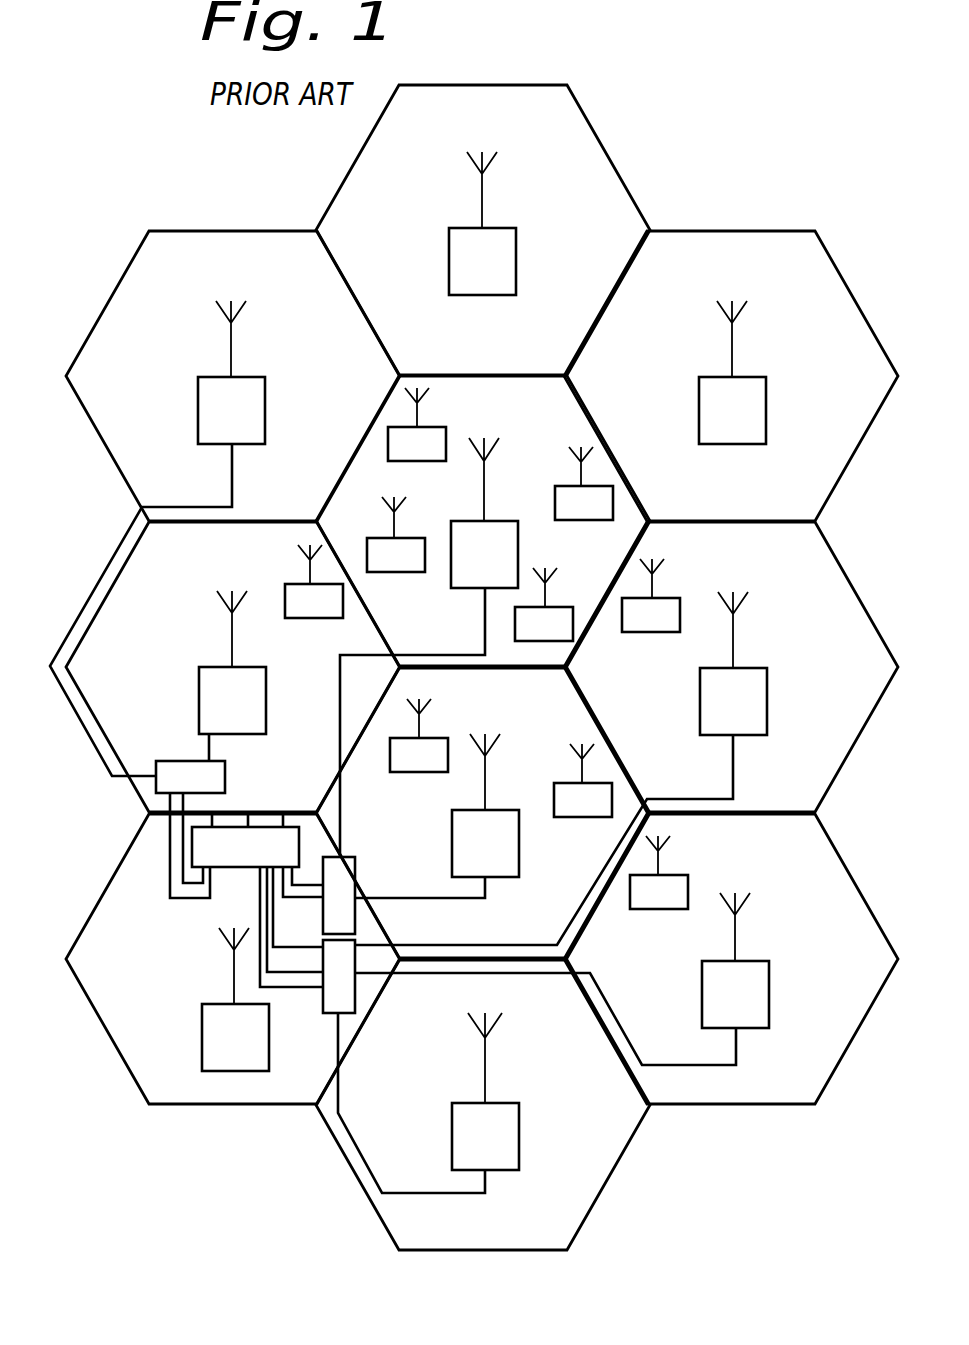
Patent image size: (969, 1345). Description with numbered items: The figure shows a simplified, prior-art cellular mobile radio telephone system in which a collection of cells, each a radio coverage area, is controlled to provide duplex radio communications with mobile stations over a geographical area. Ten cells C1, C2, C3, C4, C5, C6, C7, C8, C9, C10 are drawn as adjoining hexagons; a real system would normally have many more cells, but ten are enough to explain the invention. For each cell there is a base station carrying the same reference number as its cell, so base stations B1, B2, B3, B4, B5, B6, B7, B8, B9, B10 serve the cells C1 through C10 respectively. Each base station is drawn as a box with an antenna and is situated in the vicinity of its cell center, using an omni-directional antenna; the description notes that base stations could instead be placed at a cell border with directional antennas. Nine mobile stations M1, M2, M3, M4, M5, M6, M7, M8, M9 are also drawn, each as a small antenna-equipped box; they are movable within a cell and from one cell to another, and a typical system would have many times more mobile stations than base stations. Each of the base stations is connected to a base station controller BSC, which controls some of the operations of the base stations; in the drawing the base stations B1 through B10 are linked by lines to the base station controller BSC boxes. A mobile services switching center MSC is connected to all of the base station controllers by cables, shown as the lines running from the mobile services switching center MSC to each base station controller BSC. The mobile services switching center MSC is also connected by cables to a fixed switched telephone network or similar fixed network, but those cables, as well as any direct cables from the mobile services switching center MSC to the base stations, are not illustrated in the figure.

The base station B1 is at (429, 647).
The base station B2 is at (732, 372).
The base station B3 is at (561, 768).
The base station B4 is at (437, 816).
The base station B5 is at (232, 676).
The base station B6 is at (157, 538).
The base station B7 is at (482, 223).
The base station B8 is at (562, 979).
The base station B9 is at (428, 1103).
The base station B10 is at (235, 999).
The mobile station M1 is at (659, 872).
The mobile station M2 is at (314, 581).
The mobile station M3 is at (396, 534).
The mobile station M4 is at (584, 483).
The mobile station M5 is at (651, 595).
The mobile station M6 is at (417, 424).
The mobile station M7 is at (544, 604).
The mobile station M8 is at (583, 780).
The mobile station M9 is at (419, 735).
The cell C1 is at (425, 645).
The cell C2 is at (683, 514).
The cell C3 is at (675, 791).
The cell C4 is at (430, 941).
The cell C5 is at (233, 667).
The cell C6 is at (175, 502).
The cell C7 is at (428, 366).
The cell C8 is at (687, 1098).
The cell C9 is at (433, 1238).
The cell C10 is at (182, 1087).
The base station controller BSC is at (255, 888).
The mobile services switching center MSC is at (245, 841).